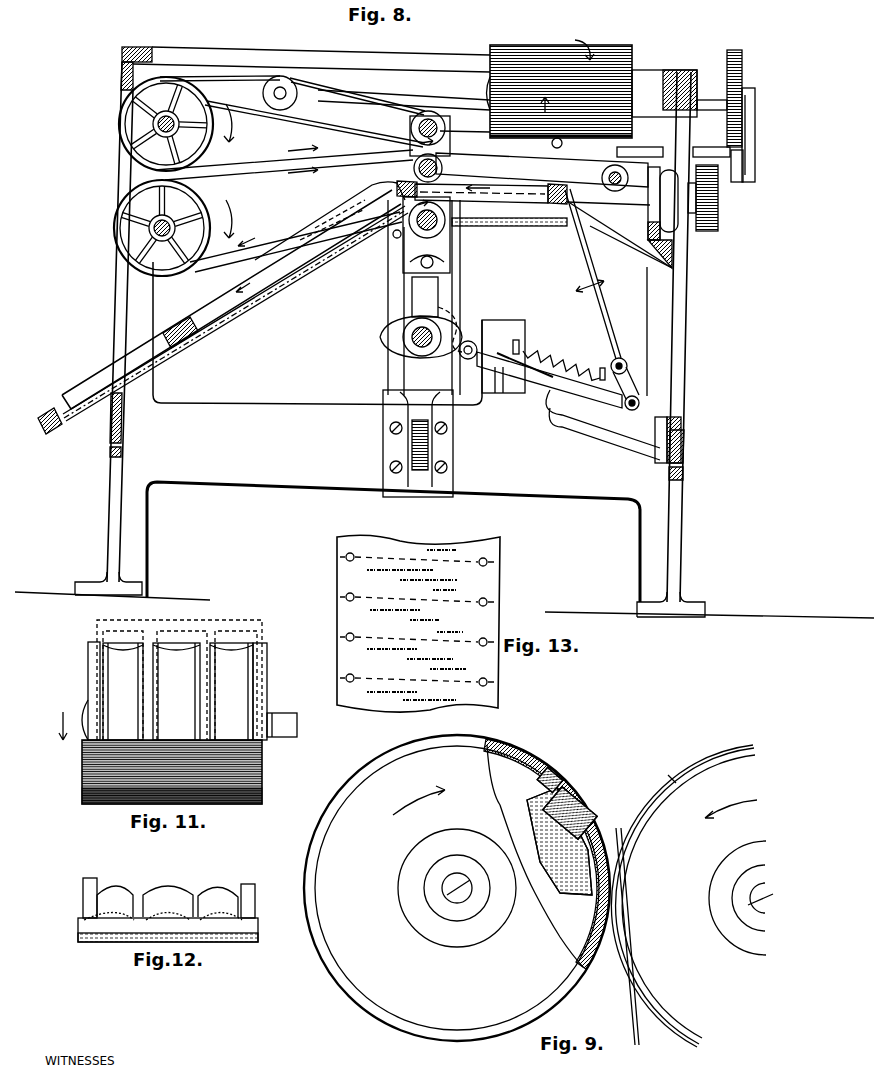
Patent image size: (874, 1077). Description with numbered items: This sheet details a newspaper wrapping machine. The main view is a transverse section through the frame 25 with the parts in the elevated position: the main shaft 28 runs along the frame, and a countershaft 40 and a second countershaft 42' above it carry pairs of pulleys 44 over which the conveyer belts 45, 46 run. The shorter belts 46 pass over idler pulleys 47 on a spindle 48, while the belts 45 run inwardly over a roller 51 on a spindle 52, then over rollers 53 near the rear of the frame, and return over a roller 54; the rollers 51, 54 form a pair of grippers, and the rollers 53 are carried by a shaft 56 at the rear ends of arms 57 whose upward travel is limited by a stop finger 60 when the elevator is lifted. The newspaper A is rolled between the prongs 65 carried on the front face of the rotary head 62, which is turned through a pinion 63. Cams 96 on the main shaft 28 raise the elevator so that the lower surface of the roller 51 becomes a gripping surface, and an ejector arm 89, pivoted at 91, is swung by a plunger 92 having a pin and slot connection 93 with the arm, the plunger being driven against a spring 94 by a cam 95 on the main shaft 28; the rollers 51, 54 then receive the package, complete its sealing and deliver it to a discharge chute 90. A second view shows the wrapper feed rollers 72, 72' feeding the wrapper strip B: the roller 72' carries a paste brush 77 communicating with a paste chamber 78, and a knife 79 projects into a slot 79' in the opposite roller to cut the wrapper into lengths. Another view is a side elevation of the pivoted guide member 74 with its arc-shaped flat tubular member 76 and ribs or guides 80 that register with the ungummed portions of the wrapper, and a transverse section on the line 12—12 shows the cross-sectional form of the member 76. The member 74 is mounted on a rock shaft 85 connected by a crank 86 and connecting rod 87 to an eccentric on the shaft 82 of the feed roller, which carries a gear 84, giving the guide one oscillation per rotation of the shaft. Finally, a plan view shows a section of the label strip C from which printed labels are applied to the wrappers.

In FIG. 8, the frame 25 is at (208, 414).
In FIG. 8, the main shaft 28 is at (410, 350).
In FIG. 8, the countershaft 40 is at (158, 231).
In FIG. 8, the countershaft 42' is at (139, 124).
In FIG. 8, the pulleys 44 is at (212, 110).
In FIG. 8, the conveyer belts 45 is at (258, 168).
In FIG. 8, the conveyer belts 46 is at (330, 100).
In FIG. 8, the idler pulleys 47 is at (430, 118).
In FIG. 8, the spindle 48 is at (450, 114).
In FIG. 8, the roller 51 is at (413, 169).
In FIG. 8, the spindle 52 is at (413, 141).
In FIG. 8, the rollers 53 is at (628, 182).
In FIG. 8, the roller 54 is at (408, 238).
In FIG. 8, the shaft 56 is at (622, 187).
In FIG. 8, the arms 57 is at (483, 168).
In FIG. 8, the stop finger 60 is at (617, 153).
In FIG. 8, the rotary head 62 is at (655, 210).
In FIG. 8, the pinion 63 is at (705, 232).
In FIG. 8, the prongs 65 is at (630, 199).
In FIG. 8, the feed roller 72 is at (592, 94).
In FIG. 9, the feed roller 72 is at (692, 892).
In FIG. 9, the feed roller 72' is at (546, 850).
In FIG. 11, the segmental pivoted member 74 is at (240, 684).
In FIG. 11, the arc-shaped flat tubular member 76 is at (246, 783).
In FIG. 12, the arc-shaped flat tubular member 76 is at (213, 905).
In FIG. 9, the brush 77 is at (588, 803).
In FIG. 9, the chamber 78 is at (567, 890).
In FIG. 9, the knife 79 is at (562, 777).
In FIG. 9, the slot 79' is at (680, 800).
In FIG. 11, the ribs 80 is at (203, 683).
In FIG. 8, the shaft 82 is at (709, 101).
In FIG. 8, the gear 84 is at (742, 77).
In FIG. 8, the rock shaft 85 is at (707, 158).
In FIG. 11, the rock shaft 85 is at (280, 722).
In FIG. 8, the crank 86 is at (742, 183).
In FIG. 8, the connecting rod 87 is at (755, 146).
In FIG. 8, the ejector arm 89 is at (605, 305).
In FIG. 8, the discharge chute 90 is at (268, 282).
In FIG. 8, the pivot 91 is at (626, 358).
In FIG. 8, the plunger 92 is at (572, 382).
In FIG. 8, the pin and slot connection 93 is at (641, 404).
In FIG. 8, the spring 94 is at (544, 352).
In FIG. 8, the cam 95 is at (443, 348).
In FIG. 8, the cams 96 is at (400, 336).
In FIG. 11, the section line 12 is at (82, 757).
In FIG. 8, the newspaper A is at (50, 414).
In FIG. 8, the strip of paper B is at (92, 392).
In FIG. 9, the strip of paper B is at (620, 987).
In FIG. 13, the label strip C is at (484, 641).